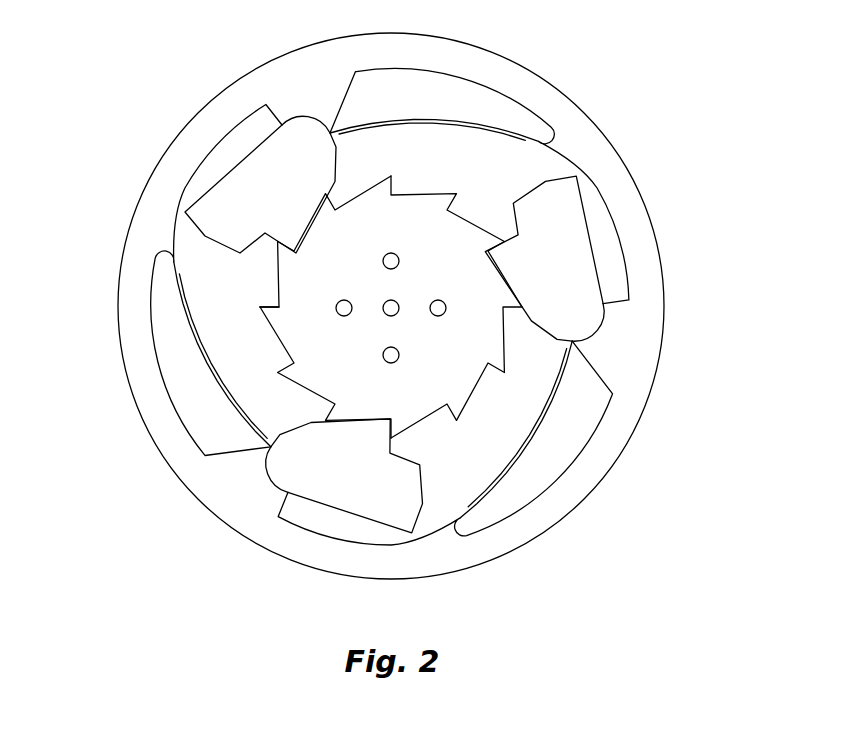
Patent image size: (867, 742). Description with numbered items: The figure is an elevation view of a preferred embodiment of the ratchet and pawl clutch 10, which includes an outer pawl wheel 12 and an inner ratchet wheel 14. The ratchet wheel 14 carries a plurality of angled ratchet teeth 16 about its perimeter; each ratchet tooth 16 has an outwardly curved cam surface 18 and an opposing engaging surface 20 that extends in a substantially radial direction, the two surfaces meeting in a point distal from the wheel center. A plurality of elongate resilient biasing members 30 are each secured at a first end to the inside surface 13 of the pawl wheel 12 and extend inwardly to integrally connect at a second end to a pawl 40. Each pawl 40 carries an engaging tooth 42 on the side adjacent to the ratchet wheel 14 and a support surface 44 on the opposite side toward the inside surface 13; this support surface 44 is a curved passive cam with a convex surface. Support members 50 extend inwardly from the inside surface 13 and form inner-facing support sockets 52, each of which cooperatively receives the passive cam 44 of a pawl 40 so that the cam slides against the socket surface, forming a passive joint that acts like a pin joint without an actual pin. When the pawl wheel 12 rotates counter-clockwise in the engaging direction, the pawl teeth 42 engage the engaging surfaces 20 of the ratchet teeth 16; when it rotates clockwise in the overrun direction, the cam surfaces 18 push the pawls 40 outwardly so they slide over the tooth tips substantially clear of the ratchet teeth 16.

The ratchet and pawl clutch 10 is at (689, 361).
The pawl wheel 12 is at (618, 192).
The inside surface 13 is at (424, 72).
The ratchet wheel 14 is at (415, 357).
The ratchet teeth 16 is at (447, 402).
The cam surface 18 is at (273, 328).
The engaging surface 20 is at (273, 305).
The resilient biasing members 30 is at (533, 442).
The pawl 40 is at (560, 262).
The engaging tooth 42 is at (378, 437).
The support surface 44 is at (607, 322).
The support member 50 is at (233, 463).
The support socket 52 is at (272, 463).